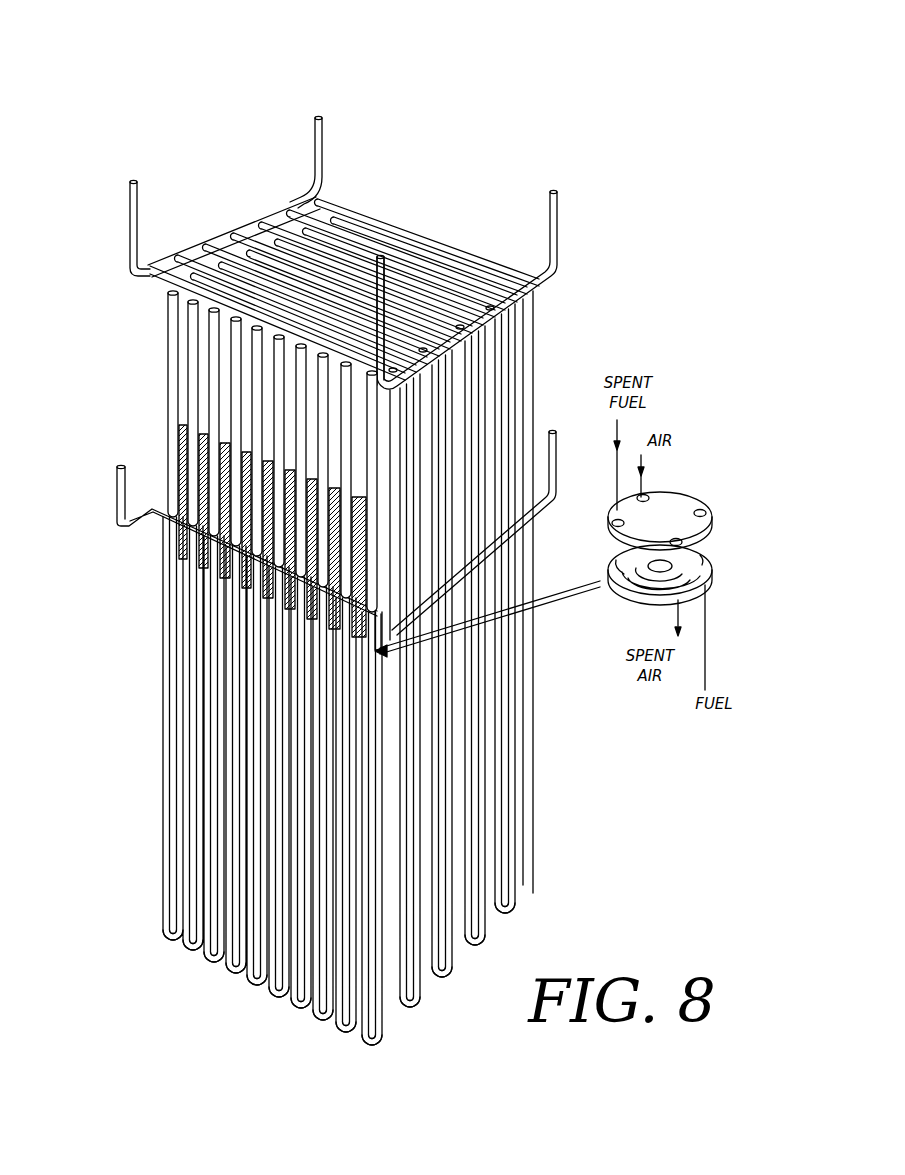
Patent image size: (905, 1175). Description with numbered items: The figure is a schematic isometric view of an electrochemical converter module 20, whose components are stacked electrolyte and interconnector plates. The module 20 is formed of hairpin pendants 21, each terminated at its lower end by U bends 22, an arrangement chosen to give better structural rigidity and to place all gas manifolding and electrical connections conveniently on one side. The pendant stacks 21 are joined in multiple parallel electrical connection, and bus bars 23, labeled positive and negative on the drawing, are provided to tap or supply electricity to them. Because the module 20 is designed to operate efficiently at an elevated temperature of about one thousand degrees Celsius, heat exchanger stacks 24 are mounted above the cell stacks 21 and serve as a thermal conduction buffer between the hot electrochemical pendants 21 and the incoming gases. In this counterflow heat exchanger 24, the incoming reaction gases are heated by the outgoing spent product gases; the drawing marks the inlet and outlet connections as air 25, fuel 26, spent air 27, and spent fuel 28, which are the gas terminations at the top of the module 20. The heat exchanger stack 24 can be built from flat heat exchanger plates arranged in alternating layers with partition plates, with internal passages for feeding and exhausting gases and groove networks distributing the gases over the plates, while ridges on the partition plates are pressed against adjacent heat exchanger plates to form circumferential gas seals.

The electrochemical converter module 20 is at (105, 215).
The hairpin pendants 21 is at (580, 496).
The U bends 22 is at (580, 813).
The bus bars 23 is at (120, 497).
The heat exchanger stacks 24 is at (580, 478).
The air inlet 25 is at (320, 100).
The fuel inlet 26 is at (553, 167).
The spent air outlet 27 is at (381, 225).
The spent fuel outlet 28 is at (133, 166).